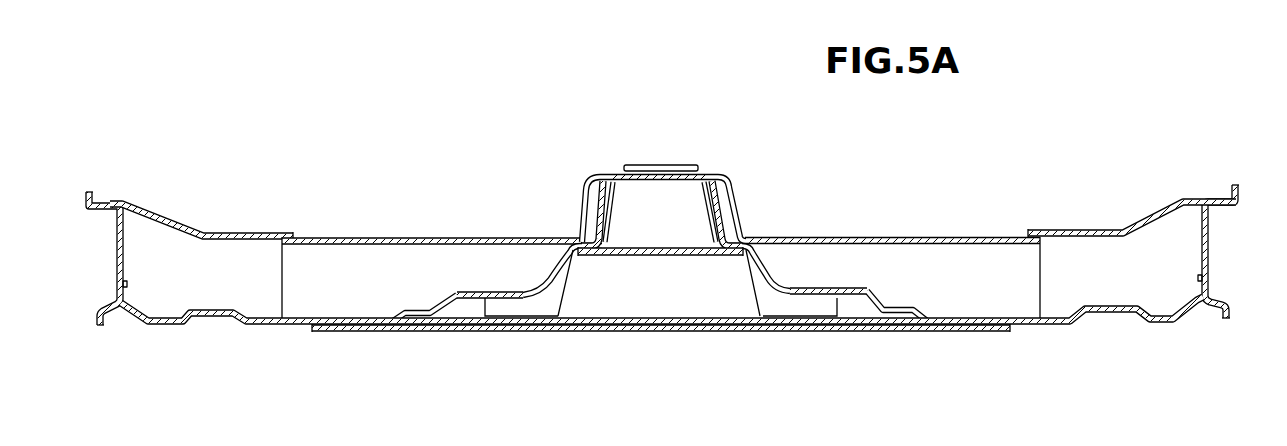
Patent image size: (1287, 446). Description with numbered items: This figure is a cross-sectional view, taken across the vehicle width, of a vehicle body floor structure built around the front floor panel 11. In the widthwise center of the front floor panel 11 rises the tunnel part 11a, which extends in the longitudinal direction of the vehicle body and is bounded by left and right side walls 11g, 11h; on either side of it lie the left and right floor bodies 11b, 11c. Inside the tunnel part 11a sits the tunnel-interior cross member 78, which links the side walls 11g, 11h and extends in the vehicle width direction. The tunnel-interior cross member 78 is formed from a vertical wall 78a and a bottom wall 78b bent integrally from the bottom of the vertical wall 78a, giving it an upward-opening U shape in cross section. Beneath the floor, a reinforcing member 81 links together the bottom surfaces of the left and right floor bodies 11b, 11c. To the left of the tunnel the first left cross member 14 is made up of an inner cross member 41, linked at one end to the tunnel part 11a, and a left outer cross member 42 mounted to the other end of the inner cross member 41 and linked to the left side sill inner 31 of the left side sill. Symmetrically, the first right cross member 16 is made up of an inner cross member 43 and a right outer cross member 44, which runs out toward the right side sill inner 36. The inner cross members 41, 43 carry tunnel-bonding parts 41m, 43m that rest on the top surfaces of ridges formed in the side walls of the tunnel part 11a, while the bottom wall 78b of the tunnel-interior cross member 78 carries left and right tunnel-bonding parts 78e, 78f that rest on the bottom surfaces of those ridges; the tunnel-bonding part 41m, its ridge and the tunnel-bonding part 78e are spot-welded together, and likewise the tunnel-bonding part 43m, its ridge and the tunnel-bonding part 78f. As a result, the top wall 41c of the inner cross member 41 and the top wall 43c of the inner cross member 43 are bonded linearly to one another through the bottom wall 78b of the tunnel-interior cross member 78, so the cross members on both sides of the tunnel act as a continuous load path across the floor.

The front floor panel 11 is at (238, 320).
The tunnel part 11a is at (603, 186).
The left floor body 11b is at (1017, 327).
The right floor body 11c is at (297, 328).
The side wall of the tunnel part 11g is at (717, 190).
The side wall of the tunnel part 11h is at (612, 192).
The first left cross member 14 is at (1000, 185).
The first right cross member 16 is at (290, 170).
The left side sill inner 31 is at (1210, 248).
The right side sill inner 36 is at (113, 253).
The inner cross member 41 is at (950, 233).
The top wall of the inner cross member 41c is at (888, 235).
The tunnel-bonding part 41m is at (737, 232).
The left outer cross member 42 is at (1118, 227).
The inner cross member 43 is at (350, 235).
The top wall of the inner cross member 43c is at (440, 237).
The tunnel-bonding part 43m is at (582, 238).
The right outer cross member 44 is at (200, 233).
The tunnel-interior cross member 78 is at (627, 257).
The vertical wall 78a is at (652, 195).
The bottom wall 78b is at (670, 257).
The tunnel-bonding part 78e is at (733, 257).
The tunnel-bonding part 78f is at (588, 257).
The reinforcing member 81 is at (453, 331).